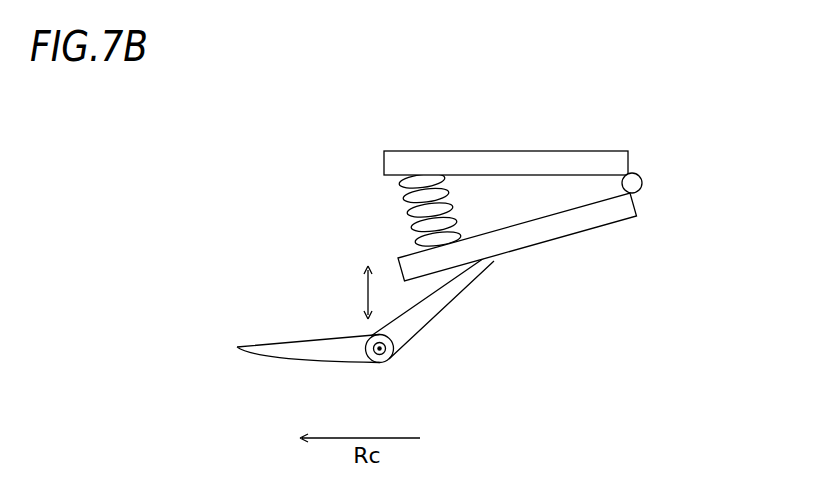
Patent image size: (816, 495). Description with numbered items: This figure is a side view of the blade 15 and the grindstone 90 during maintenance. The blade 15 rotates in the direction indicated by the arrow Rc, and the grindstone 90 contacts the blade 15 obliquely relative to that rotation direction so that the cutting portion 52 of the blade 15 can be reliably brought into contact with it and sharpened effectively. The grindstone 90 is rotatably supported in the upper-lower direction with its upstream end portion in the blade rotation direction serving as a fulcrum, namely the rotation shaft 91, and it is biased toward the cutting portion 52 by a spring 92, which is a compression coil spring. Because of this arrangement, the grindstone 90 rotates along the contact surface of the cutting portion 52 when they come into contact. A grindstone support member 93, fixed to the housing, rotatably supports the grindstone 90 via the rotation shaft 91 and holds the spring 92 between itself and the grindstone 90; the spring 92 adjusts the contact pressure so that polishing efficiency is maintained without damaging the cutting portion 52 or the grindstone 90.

The blade 15 is at (270, 358).
The cutting portion 52 is at (428, 322).
The grindstone 90 is at (623, 220).
The rotation shaft 91 is at (643, 180).
The spring 92 is at (398, 242).
The grindstone support member 93 is at (519, 150).